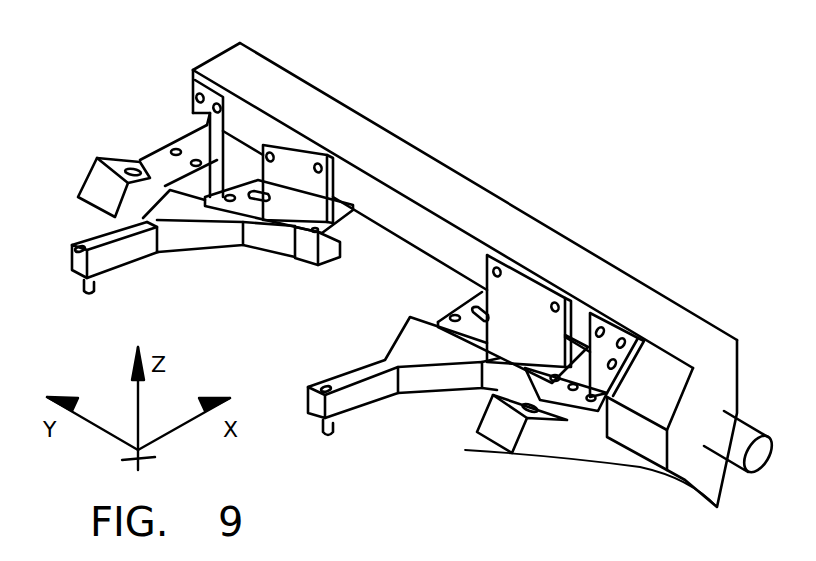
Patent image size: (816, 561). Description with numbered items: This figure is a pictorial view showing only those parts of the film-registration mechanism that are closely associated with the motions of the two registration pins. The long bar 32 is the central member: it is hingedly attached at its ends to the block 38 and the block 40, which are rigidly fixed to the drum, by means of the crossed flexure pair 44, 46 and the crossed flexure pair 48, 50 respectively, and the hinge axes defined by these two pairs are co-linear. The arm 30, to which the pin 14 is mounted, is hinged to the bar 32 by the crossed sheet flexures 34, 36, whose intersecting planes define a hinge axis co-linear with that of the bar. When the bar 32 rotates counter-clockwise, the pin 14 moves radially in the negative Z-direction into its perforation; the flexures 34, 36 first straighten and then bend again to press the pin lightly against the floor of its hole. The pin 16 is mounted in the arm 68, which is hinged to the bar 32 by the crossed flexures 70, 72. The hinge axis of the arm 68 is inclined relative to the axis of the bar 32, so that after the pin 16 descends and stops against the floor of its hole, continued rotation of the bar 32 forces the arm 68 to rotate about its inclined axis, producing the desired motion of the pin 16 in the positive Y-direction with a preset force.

The pin 14 is at (330, 437).
The pin 16 is at (80, 288).
The arm 30 is at (432, 387).
The bar 32 is at (468, 207).
The sheet flexure 34 is at (573, 337).
The sheet flexure 36 is at (533, 303).
The block 38 is at (500, 432).
The block 40 is at (97, 182).
The flexure 44 is at (623, 320).
The flexure 46 is at (573, 427).
The flexure 48 is at (208, 78).
The flexure 50 is at (188, 143).
The arm 68 is at (188, 248).
The flexure 70 is at (285, 225).
The flexure 72 is at (300, 160).